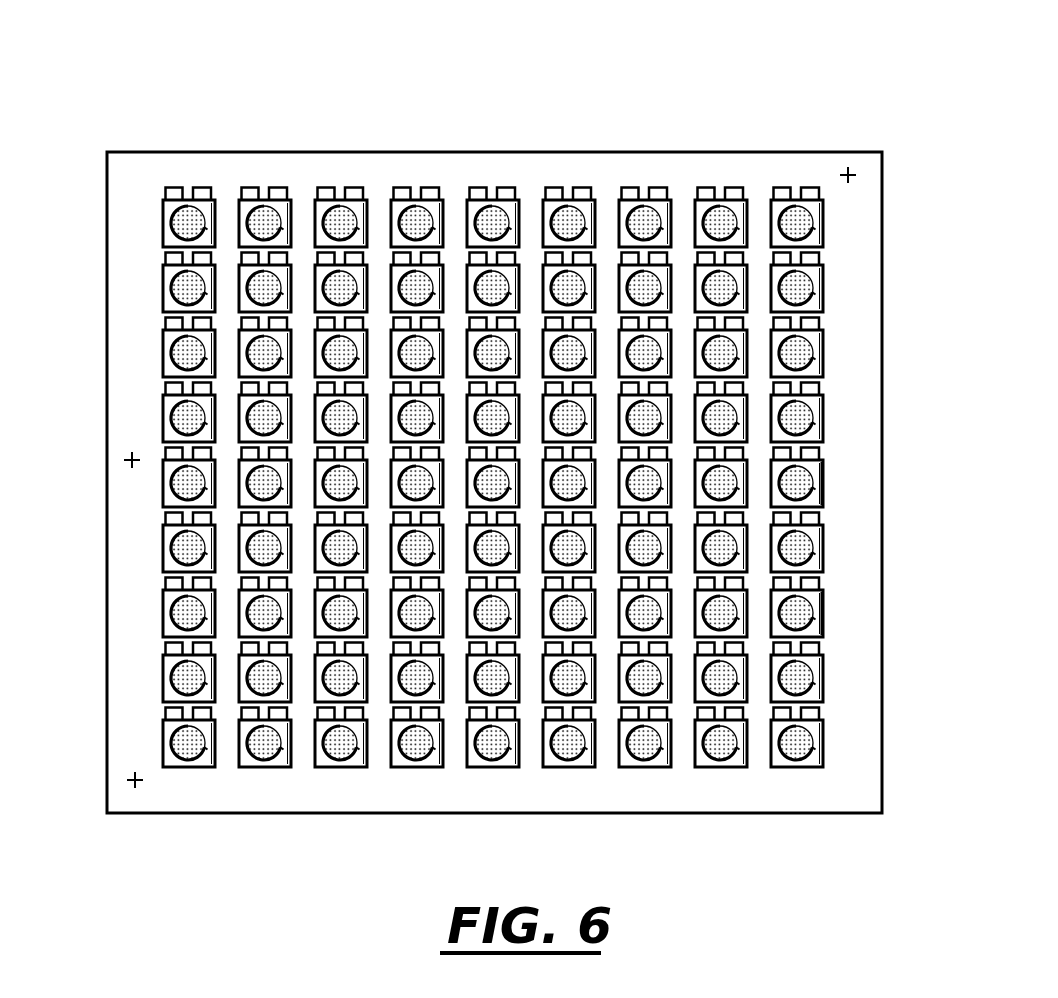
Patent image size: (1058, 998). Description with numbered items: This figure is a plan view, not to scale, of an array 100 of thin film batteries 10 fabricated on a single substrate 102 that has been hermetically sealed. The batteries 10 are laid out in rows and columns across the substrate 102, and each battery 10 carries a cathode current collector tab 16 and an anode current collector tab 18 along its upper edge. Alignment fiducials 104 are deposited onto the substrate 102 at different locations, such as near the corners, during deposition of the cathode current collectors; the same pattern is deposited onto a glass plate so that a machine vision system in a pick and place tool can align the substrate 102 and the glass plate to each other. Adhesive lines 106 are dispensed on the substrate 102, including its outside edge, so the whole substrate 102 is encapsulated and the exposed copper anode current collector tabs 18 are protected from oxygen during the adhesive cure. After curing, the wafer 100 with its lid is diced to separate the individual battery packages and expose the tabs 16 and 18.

The array 100 is at (378, 130).
The substrate 102 is at (876, 297).
The alignment fiducials 104 is at (129, 464).
The adhesive lines 106 is at (823, 615).
The thin film battery 10 is at (709, 197).
The cathode current collector tab 16 is at (474, 191).
The anode current collector tab 18 is at (505, 191).